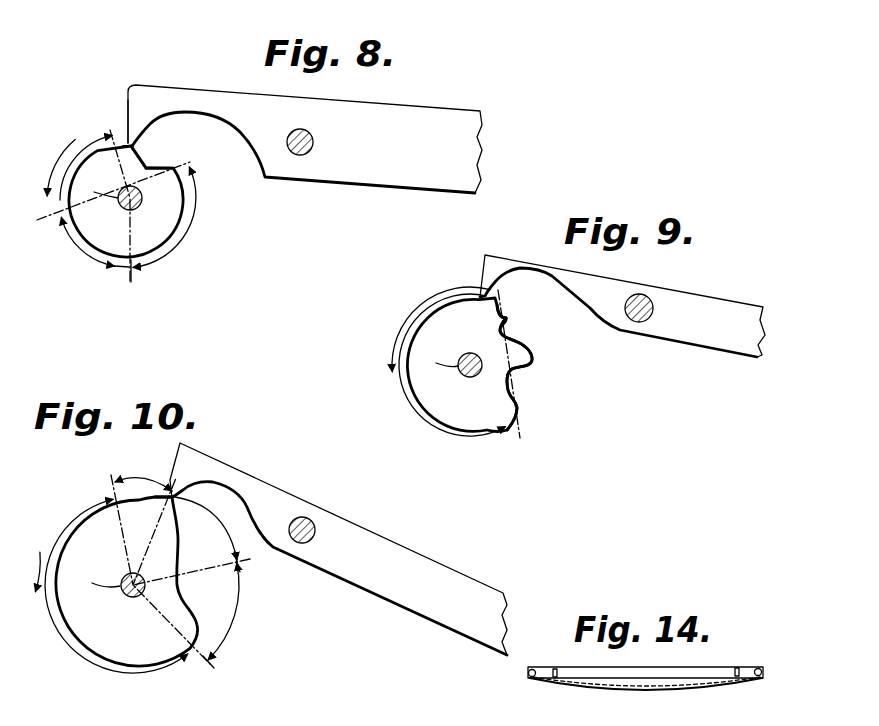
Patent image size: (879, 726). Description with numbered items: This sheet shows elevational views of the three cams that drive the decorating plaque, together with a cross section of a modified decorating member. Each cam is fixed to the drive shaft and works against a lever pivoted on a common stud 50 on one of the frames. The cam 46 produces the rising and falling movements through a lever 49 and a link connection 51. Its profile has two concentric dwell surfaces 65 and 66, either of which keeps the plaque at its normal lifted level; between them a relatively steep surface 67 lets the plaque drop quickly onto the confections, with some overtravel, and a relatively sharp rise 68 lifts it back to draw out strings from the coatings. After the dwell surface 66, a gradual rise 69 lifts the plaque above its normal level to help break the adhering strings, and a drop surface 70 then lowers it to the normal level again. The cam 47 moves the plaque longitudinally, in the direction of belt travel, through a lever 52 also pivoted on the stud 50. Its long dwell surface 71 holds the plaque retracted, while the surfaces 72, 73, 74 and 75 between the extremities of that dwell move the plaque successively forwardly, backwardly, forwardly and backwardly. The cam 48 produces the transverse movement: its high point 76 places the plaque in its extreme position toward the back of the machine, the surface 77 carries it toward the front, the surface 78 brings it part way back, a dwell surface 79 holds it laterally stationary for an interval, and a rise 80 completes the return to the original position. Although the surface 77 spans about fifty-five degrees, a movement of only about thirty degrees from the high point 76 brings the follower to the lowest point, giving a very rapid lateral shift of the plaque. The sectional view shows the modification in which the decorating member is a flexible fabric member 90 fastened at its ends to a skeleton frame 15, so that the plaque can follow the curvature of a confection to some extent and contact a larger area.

In FIG. 8, the cam 46 is at (113, 206).
In FIG. 9, the cam 47 is at (465, 364).
In FIG. 10, the cam 48 is at (147, 574).
In FIG. 8, the lever 49 is at (305, 139).
In FIG. 8, the stud 50 is at (313, 142).
In FIG. 9, the stud 50 is at (633, 303).
In FIG. 10, the stud 50 is at (314, 539).
In FIG. 10, the link connection 51 is at (338, 549).
In FIG. 9, the lever 52 is at (622, 306).
In FIG. 8, the dwell surface 65 is at (124, 141).
In FIG. 8, the dwell surface 66 is at (168, 217).
In FIG. 8, the steep surface 67 is at (141, 158).
In FIG. 8, the sharp rise 68 is at (168, 167).
In FIG. 8, the gradual rise 69 is at (95, 243).
In FIG. 8, the drop surface 70 is at (77, 167).
In FIG. 9, the long dwell surface 71 is at (432, 329).
In FIG. 9, the surface 72 is at (508, 319).
In FIG. 9, the surface 73 is at (522, 340).
In FIG. 9, the surface 74 is at (519, 366).
In FIG. 9, the surface 75 is at (518, 395).
In FIG. 10, the high point 76 is at (169, 502).
In FIG. 10, the surface 77 is at (206, 528).
In FIG. 10, the surface 78 is at (225, 606).
In FIG. 10, the dwell surface 79 is at (54, 607).
In FIG. 10, the rise 80 is at (143, 487).
In FIG. 14, the skeleton frame 15 is at (567, 673).
In FIG. 14, the fabric member 90 is at (593, 689).